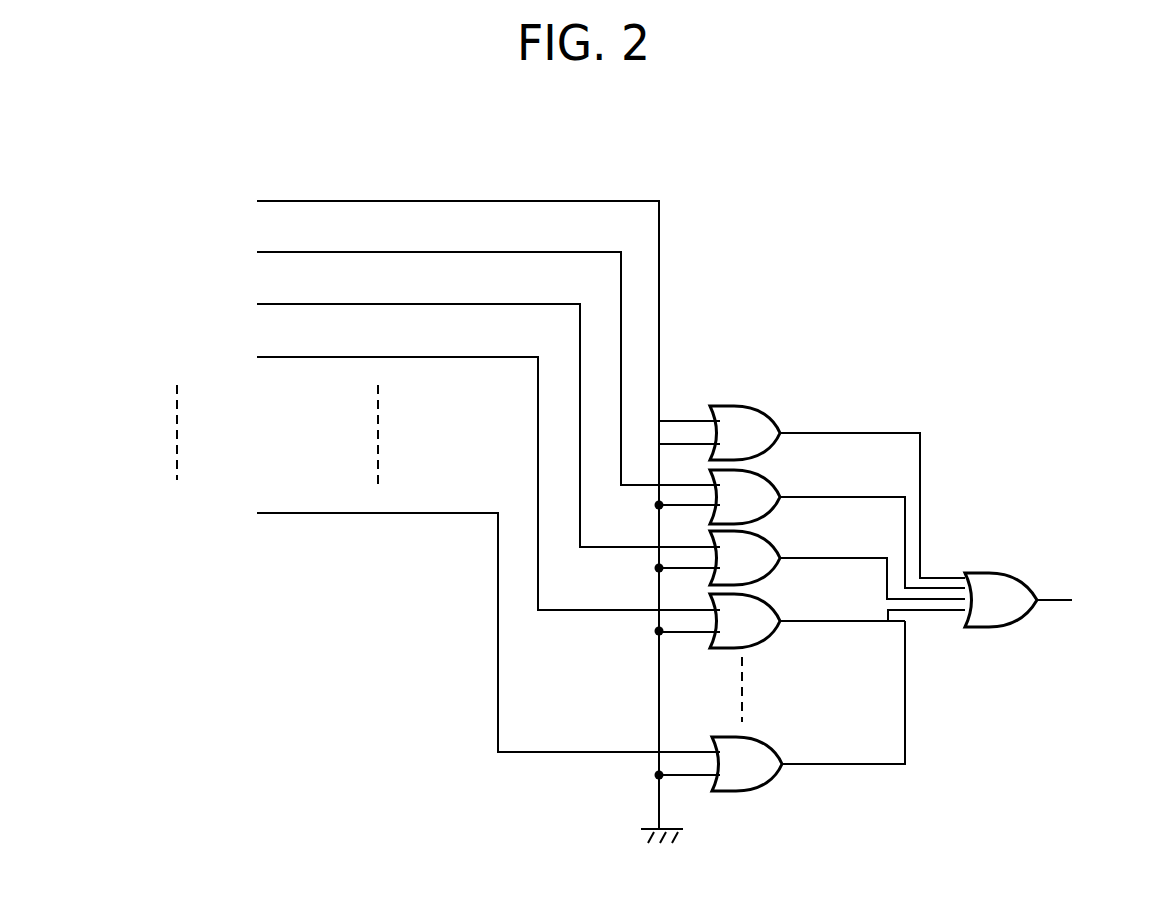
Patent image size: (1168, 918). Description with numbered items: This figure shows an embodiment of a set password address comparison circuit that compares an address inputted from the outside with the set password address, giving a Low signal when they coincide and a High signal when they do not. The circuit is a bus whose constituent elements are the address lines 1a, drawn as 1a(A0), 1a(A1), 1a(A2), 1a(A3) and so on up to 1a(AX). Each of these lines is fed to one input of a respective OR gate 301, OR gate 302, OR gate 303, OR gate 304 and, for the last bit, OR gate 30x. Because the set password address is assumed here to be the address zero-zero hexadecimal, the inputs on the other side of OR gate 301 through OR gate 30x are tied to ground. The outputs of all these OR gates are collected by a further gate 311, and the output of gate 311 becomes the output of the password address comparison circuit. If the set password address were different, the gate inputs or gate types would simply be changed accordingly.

The bus constituent element 1a is at (629, 513).
The OR gate 301 is at (756, 407).
The OR gate 302 is at (763, 471).
The OR gate 303 is at (764, 533).
The OR gate 304 is at (770, 596).
The OR gate 30x is at (766, 739).
The gate 311 is at (1005, 573).